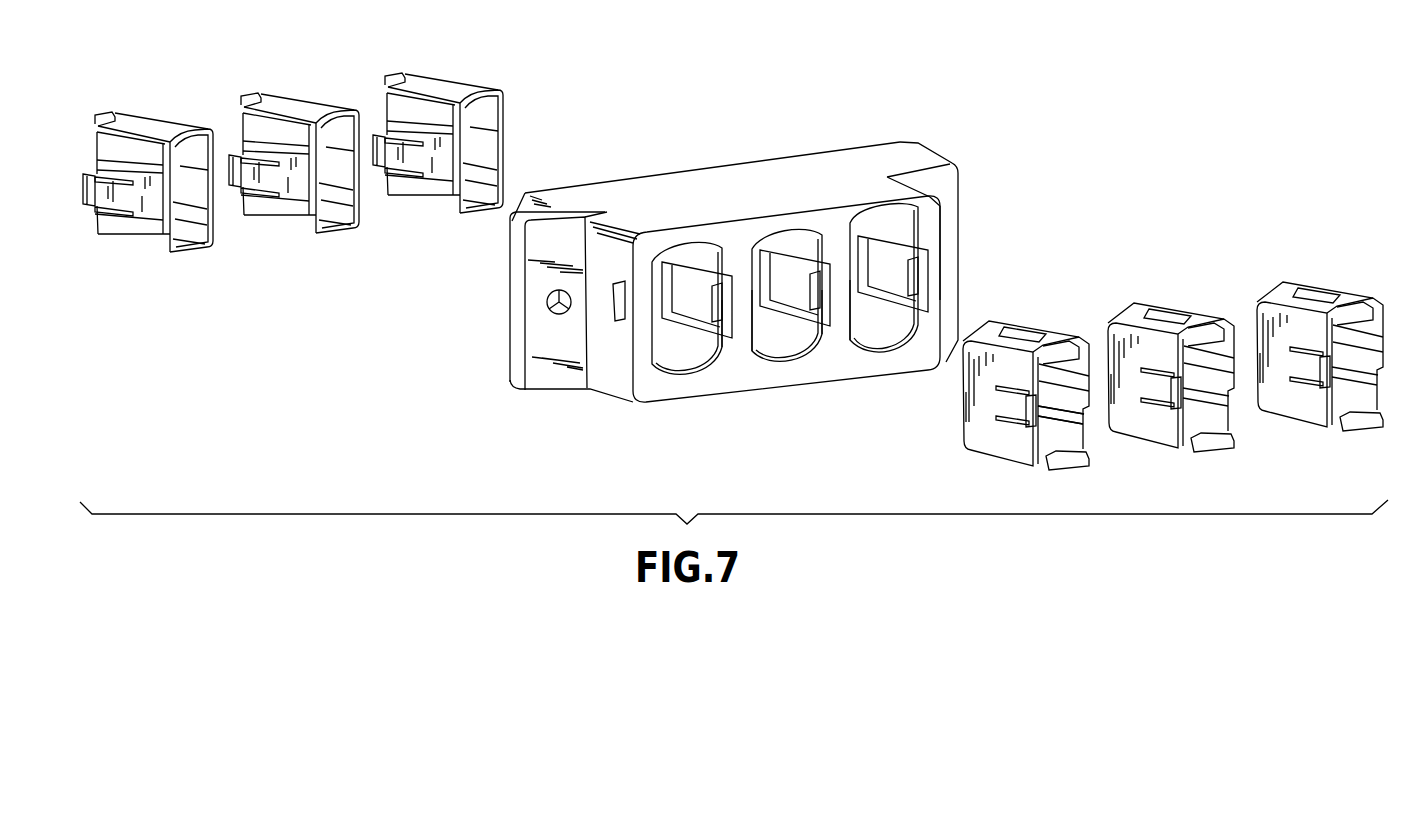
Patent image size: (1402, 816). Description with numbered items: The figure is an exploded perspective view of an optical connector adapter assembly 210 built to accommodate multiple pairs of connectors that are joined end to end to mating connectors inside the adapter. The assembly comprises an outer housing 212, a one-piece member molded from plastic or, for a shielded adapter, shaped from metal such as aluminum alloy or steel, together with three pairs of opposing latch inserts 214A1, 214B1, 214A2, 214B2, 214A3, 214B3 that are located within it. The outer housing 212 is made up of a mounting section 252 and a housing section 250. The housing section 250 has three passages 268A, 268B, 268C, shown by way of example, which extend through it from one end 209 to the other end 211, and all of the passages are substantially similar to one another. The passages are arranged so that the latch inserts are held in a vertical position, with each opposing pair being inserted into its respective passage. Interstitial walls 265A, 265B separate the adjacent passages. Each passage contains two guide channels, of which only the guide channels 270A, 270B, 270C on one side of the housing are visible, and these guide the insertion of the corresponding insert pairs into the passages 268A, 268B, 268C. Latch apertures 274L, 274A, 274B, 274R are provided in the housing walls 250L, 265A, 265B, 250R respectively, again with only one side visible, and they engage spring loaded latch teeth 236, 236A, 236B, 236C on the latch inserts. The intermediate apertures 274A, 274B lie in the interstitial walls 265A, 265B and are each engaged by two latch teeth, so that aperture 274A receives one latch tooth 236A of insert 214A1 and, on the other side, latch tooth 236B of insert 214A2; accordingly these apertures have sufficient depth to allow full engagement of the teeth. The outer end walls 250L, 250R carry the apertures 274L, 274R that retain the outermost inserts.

The end 209 is at (927, 217).
The adapter assembly 210 is at (473, 388).
The end 211 is at (833, 150).
The outer housing 212 is at (673, 180).
The latch insert 214A1 is at (972, 433).
The latch insert 214A2 is at (1150, 427).
The latch insert 214A3 is at (1293, 407).
The latch insert 214B1 is at (130, 238).
The latch insert 214B2 is at (255, 122).
The latch insert 214B3 is at (503, 103).
The latch tooth 236 is at (1175, 387).
The latch tooth 236A is at (1088, 383).
The latch tooth 236B is at (1240, 370).
The latch tooth 236C is at (1380, 347).
The housing section 250 is at (870, 188).
The housing wall 250L is at (618, 258).
The housing wall 250R is at (945, 340).
The mounting section 252 is at (555, 377).
The interstitial wall 265A is at (733, 350).
The interstitial wall 265B is at (830, 343).
The passage 268A is at (682, 360).
The passage 268B is at (783, 353).
The passage 268C is at (903, 340).
The guide channel 270A is at (687, 287).
The guide channel 270B is at (782, 280).
The guide channel 270C is at (887, 263).
The latch aperture 274A is at (717, 285).
The latch aperture 274B is at (810, 287).
The latch aperture 274L is at (618, 323).
The latch aperture 274R is at (913, 275).